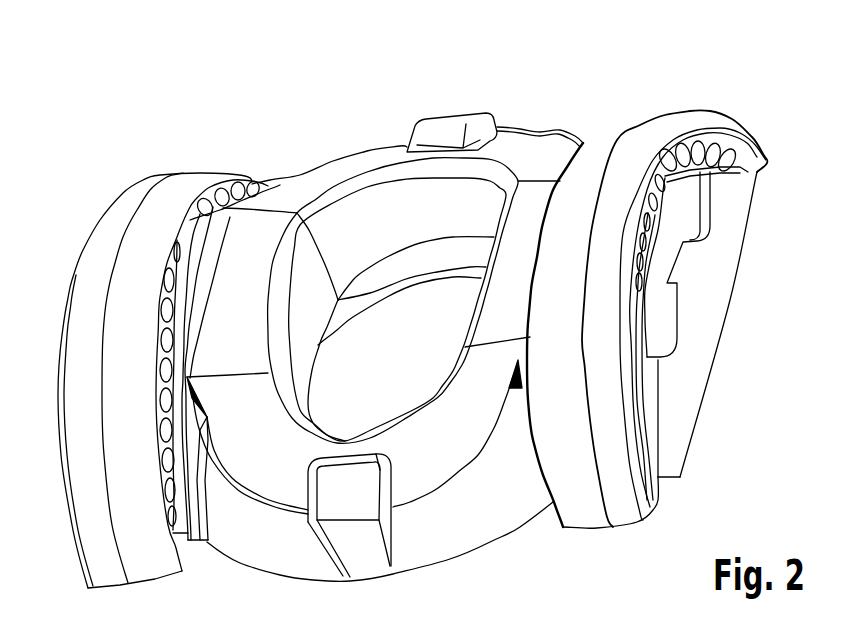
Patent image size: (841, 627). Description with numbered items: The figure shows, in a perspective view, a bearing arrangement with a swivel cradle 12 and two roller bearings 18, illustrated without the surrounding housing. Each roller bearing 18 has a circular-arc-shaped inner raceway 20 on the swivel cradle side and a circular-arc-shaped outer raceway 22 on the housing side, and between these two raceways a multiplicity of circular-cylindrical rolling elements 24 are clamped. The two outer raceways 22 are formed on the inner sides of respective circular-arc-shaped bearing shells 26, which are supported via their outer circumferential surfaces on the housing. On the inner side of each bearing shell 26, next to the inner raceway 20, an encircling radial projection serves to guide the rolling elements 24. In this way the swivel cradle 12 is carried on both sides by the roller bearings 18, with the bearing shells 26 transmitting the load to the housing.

The swivel cradle 12 is at (488, 507).
The roller bearing 18 is at (407, 301).
The inner raceway 20 is at (175, 513).
The outer raceway 22 is at (250, 190).
The rolling elements 24 is at (200, 203).
The bearing shell 26 is at (125, 394).